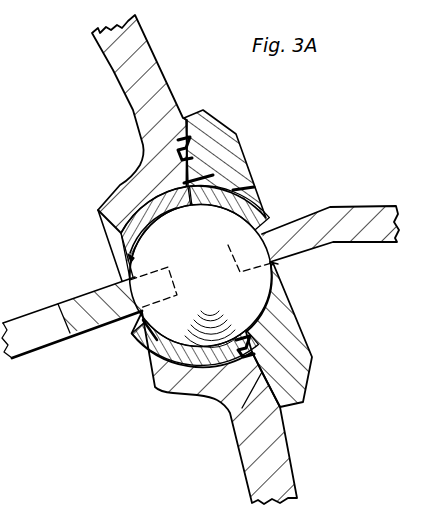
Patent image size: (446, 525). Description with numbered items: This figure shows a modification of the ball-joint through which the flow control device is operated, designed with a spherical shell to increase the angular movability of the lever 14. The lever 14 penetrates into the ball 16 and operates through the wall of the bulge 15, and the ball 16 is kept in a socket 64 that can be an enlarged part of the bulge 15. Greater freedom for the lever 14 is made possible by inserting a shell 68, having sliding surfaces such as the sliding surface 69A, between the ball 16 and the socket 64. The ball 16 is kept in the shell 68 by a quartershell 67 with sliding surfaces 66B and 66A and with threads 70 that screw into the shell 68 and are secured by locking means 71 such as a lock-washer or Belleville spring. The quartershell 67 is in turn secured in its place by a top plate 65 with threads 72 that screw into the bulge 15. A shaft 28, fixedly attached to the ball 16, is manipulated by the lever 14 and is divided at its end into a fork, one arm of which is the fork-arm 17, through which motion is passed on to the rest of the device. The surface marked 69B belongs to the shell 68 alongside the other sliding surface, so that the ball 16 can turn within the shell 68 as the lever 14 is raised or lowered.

The lever 14 is at (368, 220).
The bulge 15 is at (133, 40).
The ball 16 is at (280, 264).
The fork-arm 17 is at (38, 337).
The shaft 28 is at (97, 317).
The socket 64 is at (118, 202).
The top plate 65 is at (307, 353).
The sliding surface 66A is at (232, 190).
The sliding surface 66B is at (220, 208).
The quartershell 67 is at (238, 207).
The shell 68 is at (142, 233).
The sliding surface 69A is at (145, 190).
The seat ring 69B is at (160, 213).
The threads 70 is at (247, 337).
The locking means 71 is at (180, 393).
The threads 72 is at (240, 412).